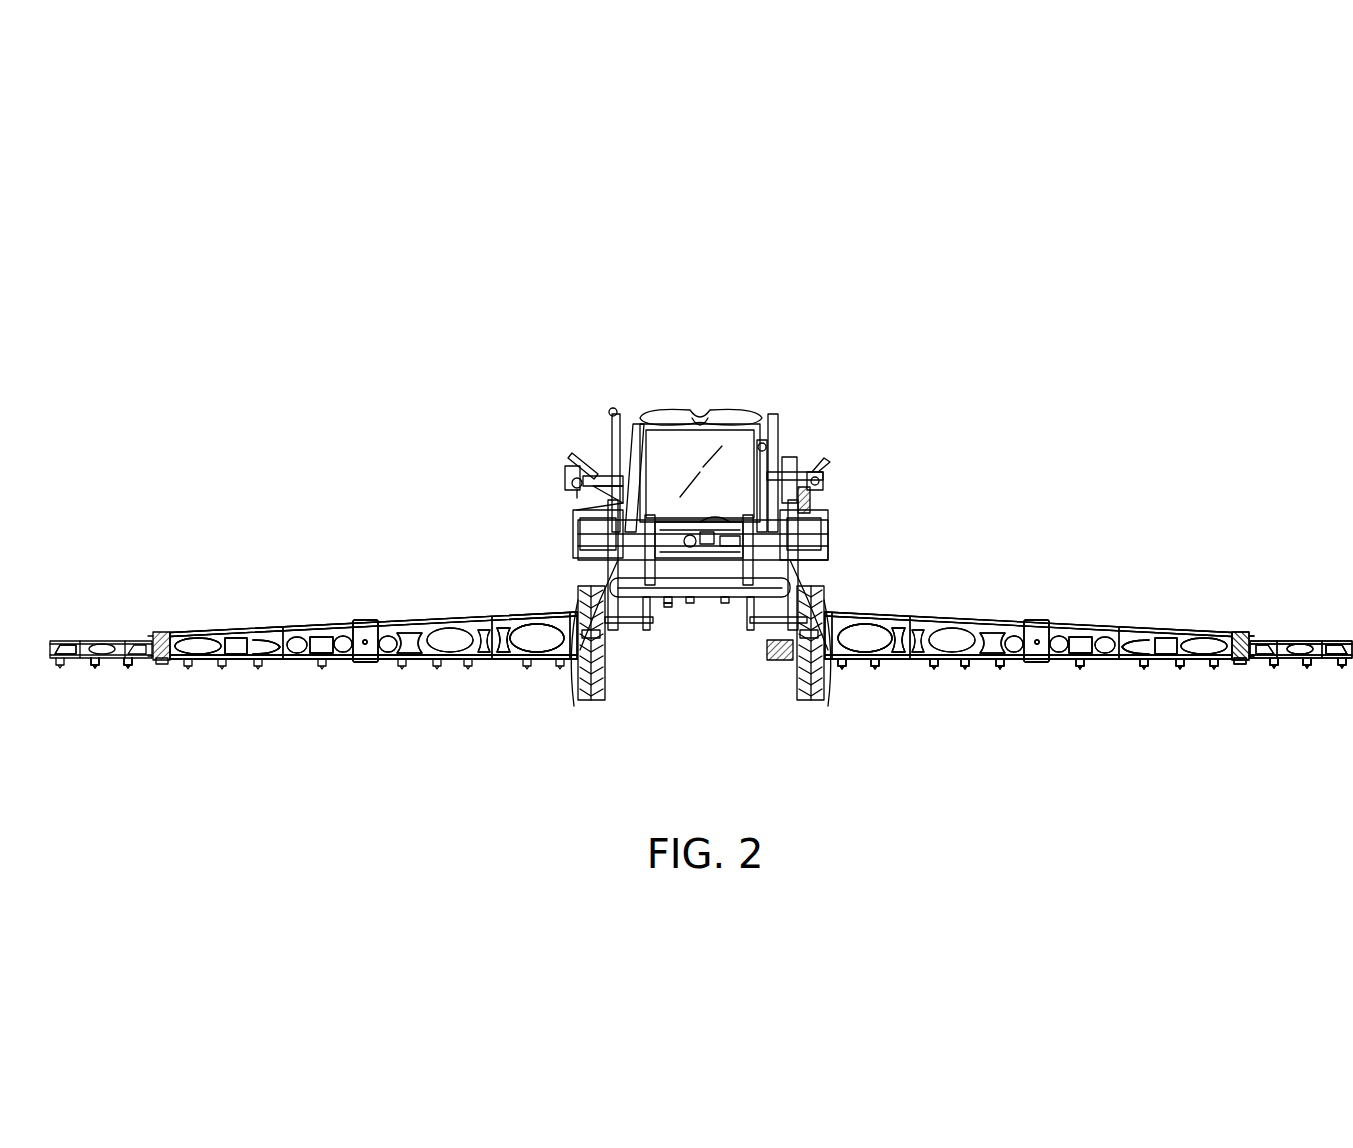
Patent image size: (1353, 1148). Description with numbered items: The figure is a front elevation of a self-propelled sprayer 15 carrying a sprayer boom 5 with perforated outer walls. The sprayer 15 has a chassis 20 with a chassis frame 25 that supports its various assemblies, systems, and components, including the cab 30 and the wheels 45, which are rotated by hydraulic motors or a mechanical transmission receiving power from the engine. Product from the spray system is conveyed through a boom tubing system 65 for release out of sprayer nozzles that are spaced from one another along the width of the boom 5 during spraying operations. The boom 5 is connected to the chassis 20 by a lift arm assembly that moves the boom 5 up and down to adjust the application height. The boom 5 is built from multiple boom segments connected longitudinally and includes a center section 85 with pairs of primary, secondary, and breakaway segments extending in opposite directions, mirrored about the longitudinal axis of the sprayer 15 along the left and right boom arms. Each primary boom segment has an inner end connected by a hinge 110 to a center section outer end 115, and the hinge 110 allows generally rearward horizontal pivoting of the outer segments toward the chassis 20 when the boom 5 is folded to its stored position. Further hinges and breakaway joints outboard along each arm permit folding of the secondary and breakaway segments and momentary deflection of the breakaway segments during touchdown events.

The sprayer boom 5 is at (541, 682).
The self-propelled sprayer 15 is at (644, 282).
The chassis 20 is at (735, 608).
The chassis frame 25 is at (716, 545).
The cab 30 is at (690, 398).
The wheels 45 is at (604, 702).
The boom tubing system 65 is at (863, 668).
The center section 85 is at (690, 636).
The hinge 110 is at (576, 688).
The center section outer end 115 is at (598, 632).